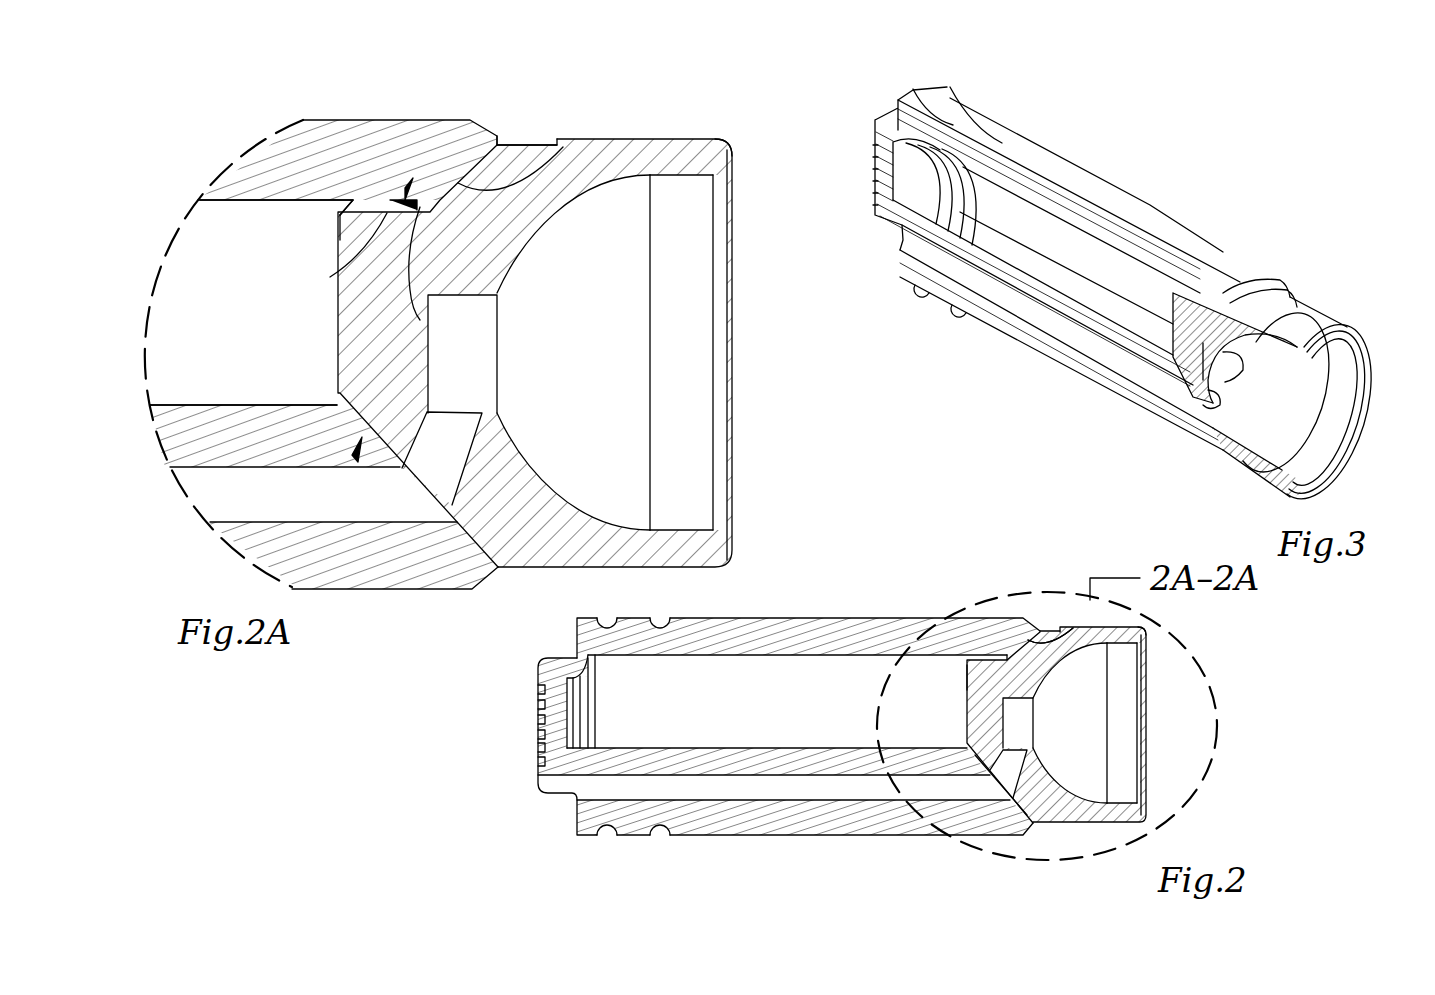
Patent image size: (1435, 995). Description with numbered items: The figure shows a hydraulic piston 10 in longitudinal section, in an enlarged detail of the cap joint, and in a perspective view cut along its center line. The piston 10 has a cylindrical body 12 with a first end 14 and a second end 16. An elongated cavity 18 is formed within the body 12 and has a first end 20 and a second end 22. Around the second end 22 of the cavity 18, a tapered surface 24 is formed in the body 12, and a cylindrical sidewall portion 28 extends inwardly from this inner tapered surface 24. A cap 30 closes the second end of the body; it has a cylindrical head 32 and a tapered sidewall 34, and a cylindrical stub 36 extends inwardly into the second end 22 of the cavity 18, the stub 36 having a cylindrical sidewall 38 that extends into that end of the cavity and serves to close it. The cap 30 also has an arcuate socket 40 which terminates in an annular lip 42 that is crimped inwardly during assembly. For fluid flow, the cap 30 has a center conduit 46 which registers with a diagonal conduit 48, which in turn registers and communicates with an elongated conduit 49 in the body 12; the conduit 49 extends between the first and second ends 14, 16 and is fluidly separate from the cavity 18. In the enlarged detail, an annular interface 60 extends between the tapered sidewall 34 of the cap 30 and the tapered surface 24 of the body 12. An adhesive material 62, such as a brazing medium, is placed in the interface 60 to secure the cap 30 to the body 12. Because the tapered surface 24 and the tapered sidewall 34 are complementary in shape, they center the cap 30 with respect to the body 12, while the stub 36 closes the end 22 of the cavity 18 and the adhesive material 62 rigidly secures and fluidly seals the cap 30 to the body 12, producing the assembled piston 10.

In FIG. 2A, the hydraulic piston 10 is at (513, 95).
In FIG. 2, the hydraulic piston 10 is at (836, 549).
In FIG. 3, the hydraulic piston 10 is at (1053, 108).
In FIG. 2A, the cylindrical body 12 is at (424, 118).
In FIG. 2, the cylindrical body 12 is at (870, 620).
In FIG. 3, the cylindrical body 12 is at (1082, 166).
In FIG. 2, the first end 14 is at (540, 657).
In FIG. 3, the first end 14 is at (887, 115).
In FIG. 2A, the second end 16 is at (497, 140).
In FIG. 2, the second end 16 is at (1033, 823).
In FIG. 3, the second end 16 is at (1267, 278).
In FIG. 2A, the elongated cavity 18 is at (211, 262).
In FIG. 2, the elongated cavity 18 is at (710, 675).
In FIG. 3, the elongated cavity 18 is at (1097, 260).
In FIG. 2, the first end 20 is at (592, 708).
In FIG. 3, the first end 20 is at (907, 178).
In FIG. 2A, the second end 22 is at (340, 227).
In FIG. 2, the second end 22 is at (962, 690).
In FIG. 2A, the tapered surface 24 is at (572, 150).
In FIG. 2, the tapered surface 24 is at (1038, 638).
In FIG. 2A, the cylindrical sidewall portion 28 is at (390, 203).
In FIG. 2, the cylindrical sidewall portion 28 is at (980, 643).
In FIG. 2A, the cap 30 is at (730, 133).
In FIG. 2, the cap 30 is at (1146, 623).
In FIG. 3, the cap 30 is at (1338, 317).
In FIG. 2A, the cylindrical head 32 is at (641, 139).
In FIG. 2, the cylindrical head 32 is at (1078, 627).
In FIG. 3, the cylindrical head 32 is at (1307, 306).
In FIG. 2, the tapered sidewall 34 is at (975, 763).
In FIG. 2A, the cylindrical stub 36 is at (357, 310).
In FIG. 2, the cylindrical stub 36 is at (977, 682).
In FIG. 3, the cylindrical stub 36 is at (1140, 317).
In FIG. 2A, the cylindrical sidewall 38 is at (353, 197).
In FIG. 2A, the arcuate socket 40 is at (683, 340).
In FIG. 2, the arcuate socket 40 is at (1131, 681).
In FIG. 3, the arcuate socket 40 is at (1316, 367).
In FIG. 2A, the annular lip 42 is at (729, 170).
In FIG. 2, the annular lip 42 is at (1147, 719).
In FIG. 3, the annular lip 42 is at (1327, 463).
In FIG. 2A, the center conduit 46 is at (470, 350).
In FIG. 2, the center conduit 46 is at (1013, 712).
In FIG. 3, the center conduit 46 is at (1223, 362).
In FIG. 2A, the diagonal conduit 48 is at (450, 443).
In FIG. 2, the diagonal conduit 48 is at (1010, 770).
In FIG. 3, the diagonal conduit 48 is at (1213, 392).
In FIG. 2A, the elongated conduit 49 is at (380, 500).
In FIG. 2, the elongated conduit 49 is at (793, 795).
In FIG. 3, the elongated conduit 49 is at (993, 303).
In FIG. 2A, the annular interface 60 is at (407, 200).
In FIG. 2A, the adhesive material 62 is at (417, 210).